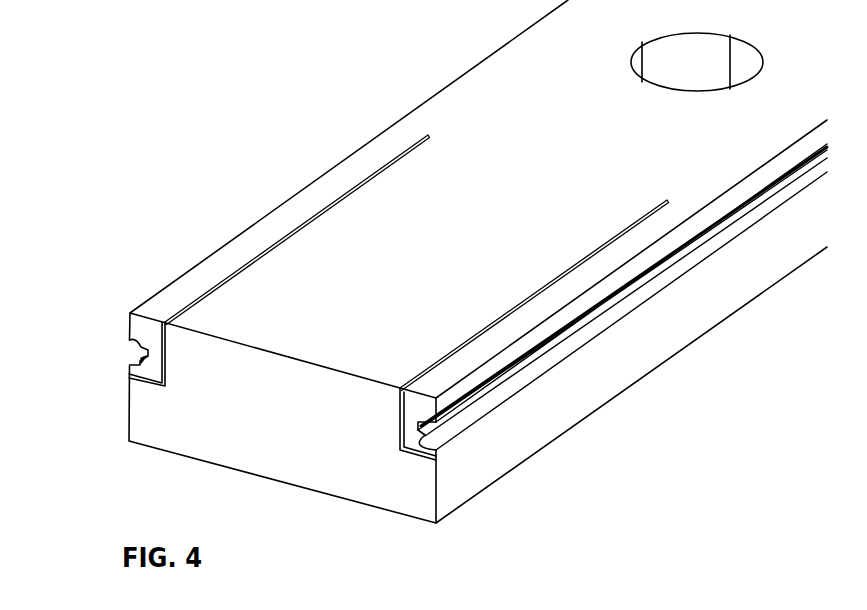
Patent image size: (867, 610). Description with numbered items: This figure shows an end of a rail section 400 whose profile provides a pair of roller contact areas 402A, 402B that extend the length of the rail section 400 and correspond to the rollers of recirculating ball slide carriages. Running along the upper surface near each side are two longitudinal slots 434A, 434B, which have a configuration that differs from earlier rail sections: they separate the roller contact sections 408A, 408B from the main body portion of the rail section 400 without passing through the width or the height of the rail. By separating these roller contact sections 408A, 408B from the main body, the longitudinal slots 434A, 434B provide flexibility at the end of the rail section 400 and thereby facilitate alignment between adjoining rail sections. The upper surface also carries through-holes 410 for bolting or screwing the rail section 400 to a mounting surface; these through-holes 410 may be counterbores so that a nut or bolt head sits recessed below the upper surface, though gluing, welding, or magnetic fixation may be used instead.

The rail section 400 is at (507, 201).
The roller contact area 402A is at (124, 349).
The roller contact area 402B is at (438, 432).
The roller contact section 408A is at (283, 206).
The roller contact section 408B is at (563, 298).
The through-hole 410 is at (705, 71).
The longitudinal slot 434A is at (428, 135).
The longitudinal slot 434B is at (635, 219).